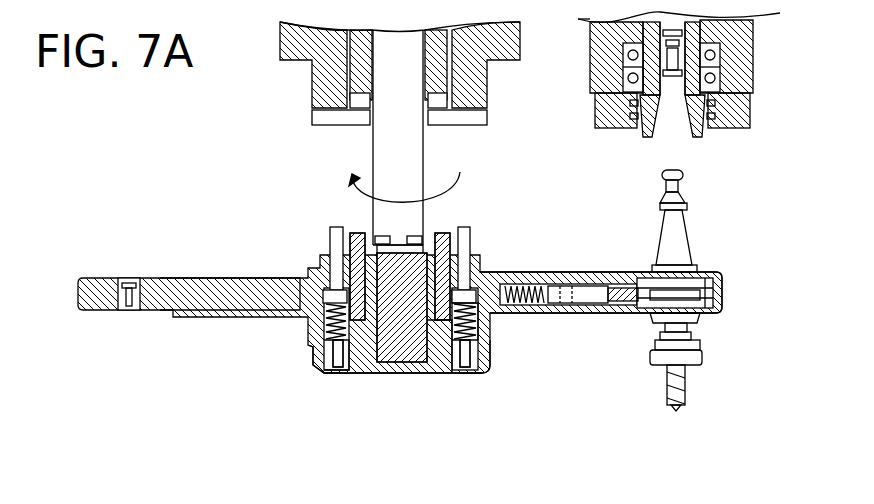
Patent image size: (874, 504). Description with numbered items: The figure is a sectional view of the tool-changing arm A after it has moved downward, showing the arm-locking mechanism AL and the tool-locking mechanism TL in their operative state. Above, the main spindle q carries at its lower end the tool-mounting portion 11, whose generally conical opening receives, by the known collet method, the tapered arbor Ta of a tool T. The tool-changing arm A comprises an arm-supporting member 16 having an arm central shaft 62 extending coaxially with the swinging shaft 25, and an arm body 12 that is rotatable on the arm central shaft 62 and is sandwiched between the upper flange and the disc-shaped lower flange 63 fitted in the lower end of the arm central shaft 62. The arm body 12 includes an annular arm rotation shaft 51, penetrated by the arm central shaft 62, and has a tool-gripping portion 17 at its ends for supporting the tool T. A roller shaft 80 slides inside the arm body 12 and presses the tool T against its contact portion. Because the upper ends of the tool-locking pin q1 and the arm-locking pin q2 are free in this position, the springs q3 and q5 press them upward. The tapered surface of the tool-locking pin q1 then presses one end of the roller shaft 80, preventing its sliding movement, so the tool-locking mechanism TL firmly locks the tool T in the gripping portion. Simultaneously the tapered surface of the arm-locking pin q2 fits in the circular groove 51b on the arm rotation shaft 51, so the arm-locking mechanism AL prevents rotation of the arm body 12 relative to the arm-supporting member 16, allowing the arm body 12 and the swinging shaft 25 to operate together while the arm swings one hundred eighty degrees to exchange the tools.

The swinging shaft 25 is at (412, 150).
The tool-gripping portion 17 is at (125, 270).
The arm-locking pin q2 is at (333, 242).
The tool-locking pin q1 is at (470, 240).
The arm body 12 is at (515, 266).
The roller shaft 80 is at (592, 288).
The arbor Ta is at (690, 228).
The tool-mounting portion 11 is at (640, 128).
The main spindle q is at (708, 130).
The circular groove 51b is at (318, 290).
The spring q5 is at (305, 322).
The arm-locking mechanism AL is at (324, 349).
The lower flange 63 is at (320, 375).
The tool-changing arm A is at (358, 380).
The arm central shaft 62 is at (396, 352).
The arm rotation shaft 51 is at (432, 340).
The arm-supporting member 16 is at (486, 372).
The tool-locking mechanism TL is at (483, 341).
The spring q3 is at (494, 320).
The tool T is at (692, 377).